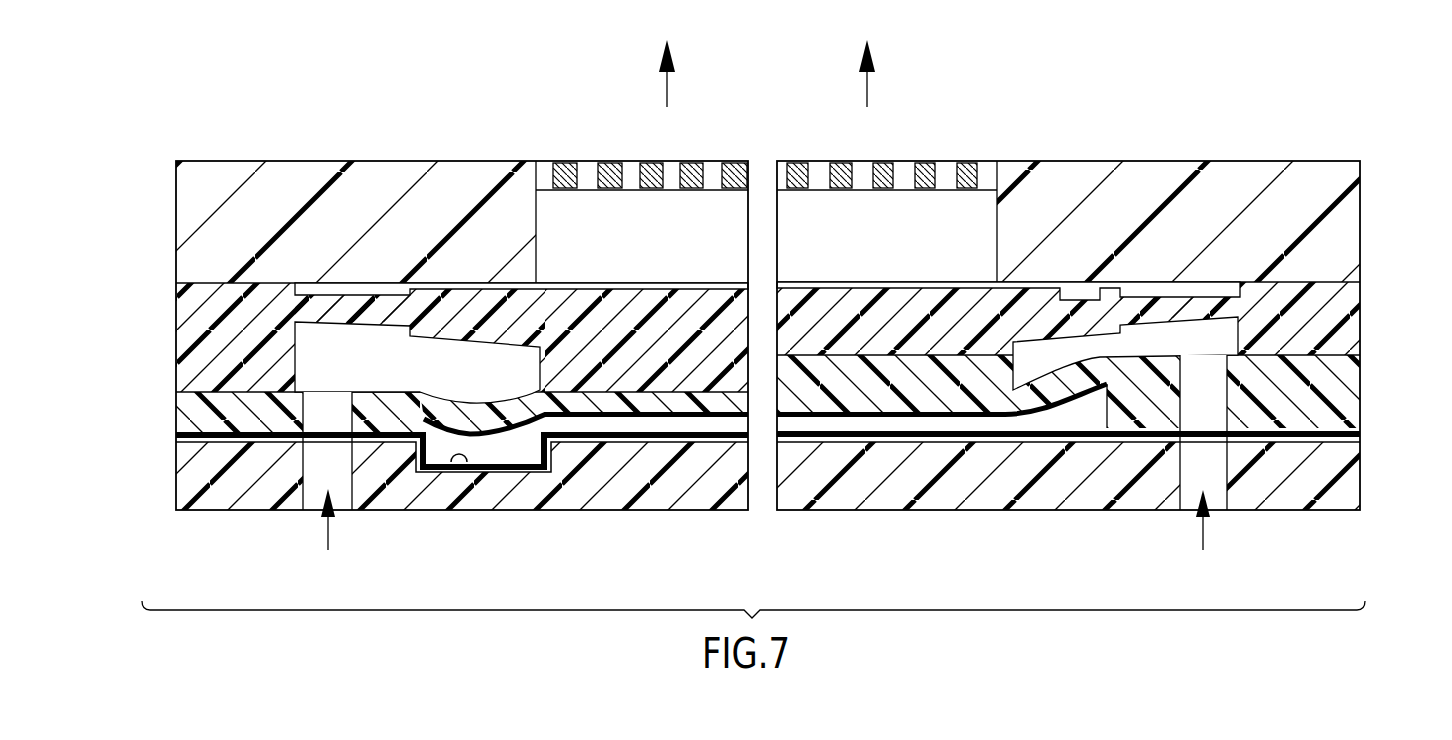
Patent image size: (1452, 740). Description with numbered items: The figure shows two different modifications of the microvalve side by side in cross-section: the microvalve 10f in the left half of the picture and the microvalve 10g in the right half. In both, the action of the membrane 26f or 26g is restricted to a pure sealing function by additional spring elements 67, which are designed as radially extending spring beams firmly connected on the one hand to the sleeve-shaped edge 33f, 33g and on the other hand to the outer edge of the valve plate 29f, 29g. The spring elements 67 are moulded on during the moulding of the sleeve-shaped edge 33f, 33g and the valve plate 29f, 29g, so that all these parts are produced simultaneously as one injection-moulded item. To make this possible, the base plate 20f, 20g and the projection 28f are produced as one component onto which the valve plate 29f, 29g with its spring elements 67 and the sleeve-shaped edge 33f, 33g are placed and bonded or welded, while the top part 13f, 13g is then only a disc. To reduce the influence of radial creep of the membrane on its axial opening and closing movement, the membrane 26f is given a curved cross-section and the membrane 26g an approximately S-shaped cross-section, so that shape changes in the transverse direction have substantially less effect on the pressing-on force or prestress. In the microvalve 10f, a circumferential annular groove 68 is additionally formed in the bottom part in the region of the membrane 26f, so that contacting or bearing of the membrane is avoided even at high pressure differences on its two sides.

The microvalve 10f is at (142, 512).
The microvalve 10g is at (1382, 495).
The top part 13f is at (150, 180).
The top part 13g is at (1377, 160).
The base plate 20f is at (178, 417).
The base plate 20g is at (1356, 410).
The membrane 26f is at (507, 414).
The membrane 26g is at (1073, 388).
The projection 28f is at (663, 348).
The valve plate 29f is at (433, 315).
The valve plate 29g is at (1110, 303).
The sleeve-shaped edge 33f is at (178, 334).
The sleeve-shaped edge 33g is at (1345, 336).
The spring elements 67 is at (340, 305).
The annular groove 68 is at (466, 472).